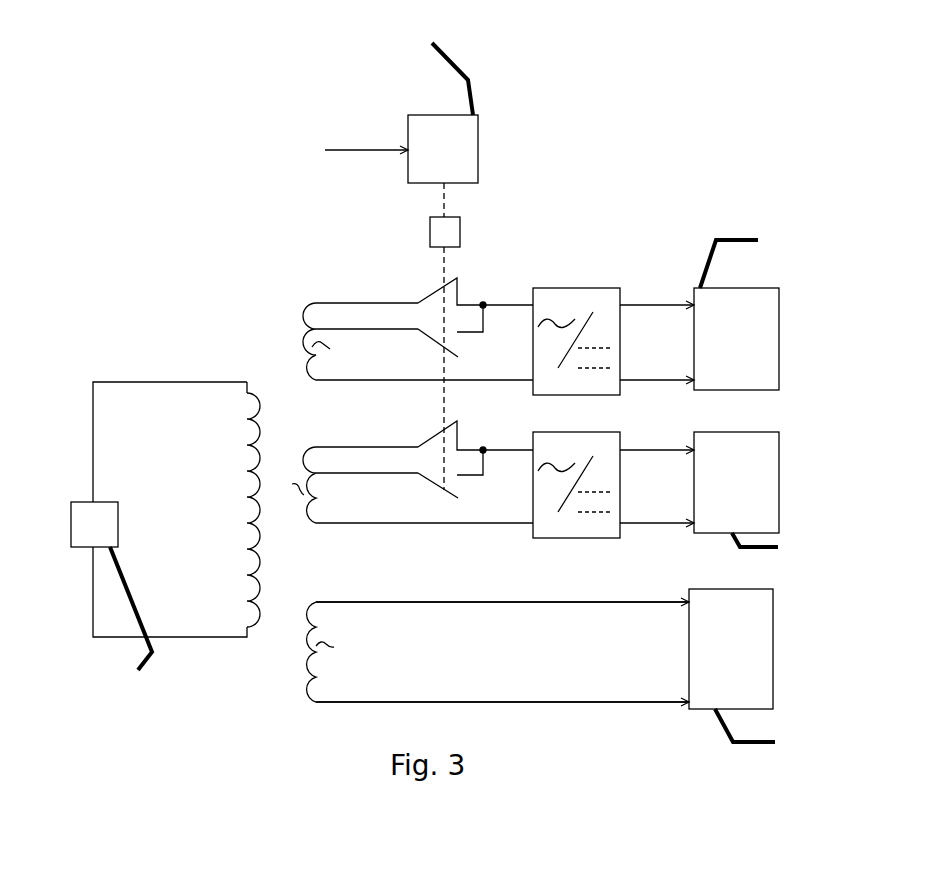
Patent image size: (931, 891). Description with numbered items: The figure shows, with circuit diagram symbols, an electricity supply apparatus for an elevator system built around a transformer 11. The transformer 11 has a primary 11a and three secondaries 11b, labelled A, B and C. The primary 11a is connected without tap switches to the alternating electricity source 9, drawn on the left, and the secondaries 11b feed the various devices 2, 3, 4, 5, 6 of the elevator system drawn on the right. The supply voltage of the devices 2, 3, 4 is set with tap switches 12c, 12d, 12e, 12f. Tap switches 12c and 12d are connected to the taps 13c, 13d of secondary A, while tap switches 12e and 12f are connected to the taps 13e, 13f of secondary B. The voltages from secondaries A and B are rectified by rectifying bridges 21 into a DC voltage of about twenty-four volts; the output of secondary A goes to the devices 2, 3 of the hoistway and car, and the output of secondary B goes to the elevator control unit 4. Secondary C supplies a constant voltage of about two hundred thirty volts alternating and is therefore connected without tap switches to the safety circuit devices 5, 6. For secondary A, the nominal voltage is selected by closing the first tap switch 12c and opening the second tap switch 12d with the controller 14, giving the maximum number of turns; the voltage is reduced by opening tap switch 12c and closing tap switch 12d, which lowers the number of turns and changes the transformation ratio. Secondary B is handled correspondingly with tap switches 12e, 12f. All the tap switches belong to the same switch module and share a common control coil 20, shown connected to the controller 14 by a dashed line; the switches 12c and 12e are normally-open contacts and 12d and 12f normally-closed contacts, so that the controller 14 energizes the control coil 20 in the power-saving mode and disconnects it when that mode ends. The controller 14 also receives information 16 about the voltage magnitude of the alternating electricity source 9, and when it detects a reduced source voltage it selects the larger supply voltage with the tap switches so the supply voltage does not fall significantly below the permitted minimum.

The electrical devices of the elevator car 2 is at (762, 314).
The electrical devices of the elevator hoistway 3 is at (715, 352).
The elevator control unit 4 is at (729, 494).
The safety circuit 5 is at (582, 675).
The safety circuit 6 is at (706, 662).
The alternating electricity source 9 is at (88, 536).
The transformer 11 is at (391, 534).
The primary 11a is at (240, 497).
The secondaries 11b is at (308, 711).
The first tap switch 12c is at (428, 293).
The second tap switch 12d is at (433, 347).
The tap switch 12e is at (440, 433).
The tap switch 12f is at (433, 485).
The tap of the secondary A 13c is at (373, 303).
The tap of the secondary A 13d is at (357, 328).
The tap of the secondary B 13e is at (323, 474).
The tap of the secondary B 13f is at (318, 449).
The controller 14 is at (431, 162).
The information about the voltage magnitude 16 is at (362, 150).
The control coil 20 is at (460, 232).
The rectifying bridge 21 is at (573, 288).